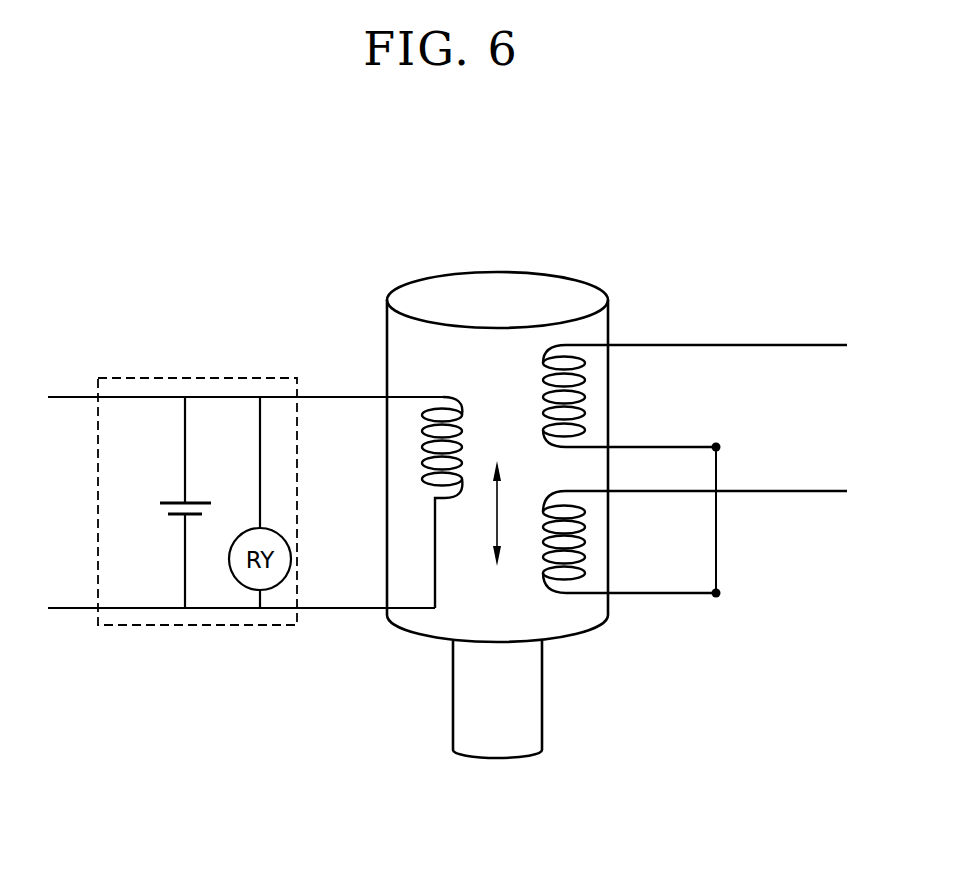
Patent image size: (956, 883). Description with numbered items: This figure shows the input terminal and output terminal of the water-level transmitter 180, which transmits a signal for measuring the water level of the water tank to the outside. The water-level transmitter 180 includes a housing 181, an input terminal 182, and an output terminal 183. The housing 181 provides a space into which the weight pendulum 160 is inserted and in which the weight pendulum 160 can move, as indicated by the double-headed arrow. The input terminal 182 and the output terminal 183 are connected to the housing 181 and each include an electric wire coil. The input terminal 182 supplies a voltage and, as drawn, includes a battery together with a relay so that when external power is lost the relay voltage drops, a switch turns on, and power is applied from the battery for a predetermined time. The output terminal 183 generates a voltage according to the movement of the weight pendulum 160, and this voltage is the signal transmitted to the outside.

The water-level transmitter 180 is at (408, 262).
The housing 181 is at (488, 292).
The input terminal 182 is at (443, 396).
The output terminal 183 is at (563, 344).
The weight pendulum 160 is at (543, 708).